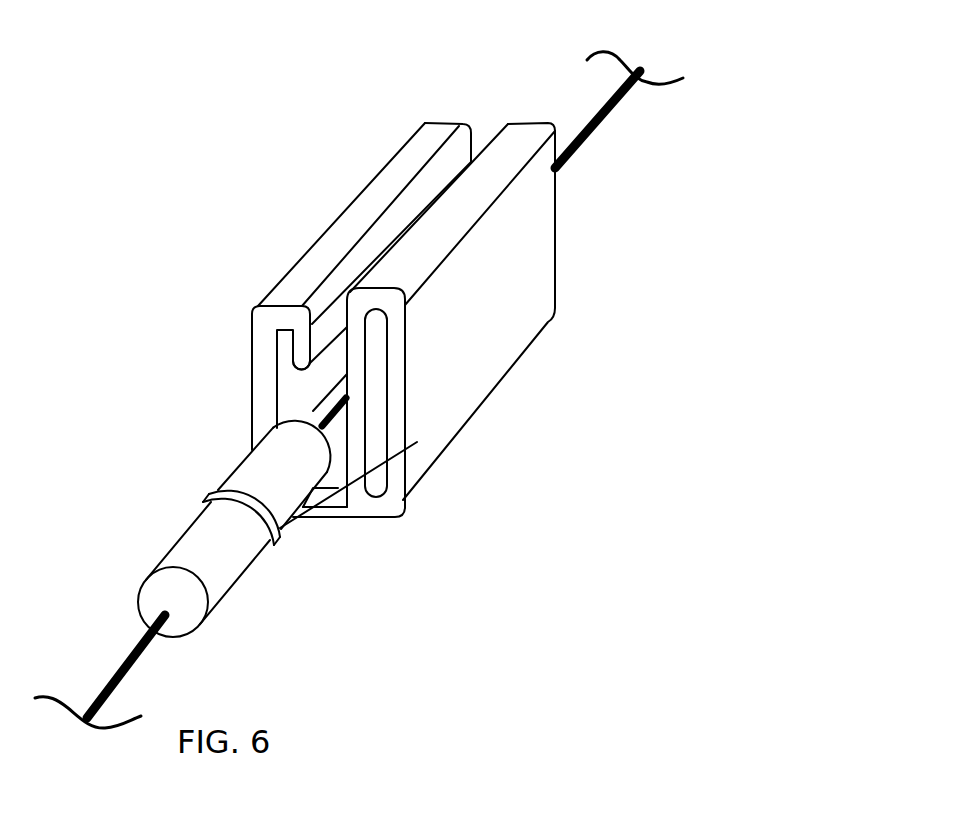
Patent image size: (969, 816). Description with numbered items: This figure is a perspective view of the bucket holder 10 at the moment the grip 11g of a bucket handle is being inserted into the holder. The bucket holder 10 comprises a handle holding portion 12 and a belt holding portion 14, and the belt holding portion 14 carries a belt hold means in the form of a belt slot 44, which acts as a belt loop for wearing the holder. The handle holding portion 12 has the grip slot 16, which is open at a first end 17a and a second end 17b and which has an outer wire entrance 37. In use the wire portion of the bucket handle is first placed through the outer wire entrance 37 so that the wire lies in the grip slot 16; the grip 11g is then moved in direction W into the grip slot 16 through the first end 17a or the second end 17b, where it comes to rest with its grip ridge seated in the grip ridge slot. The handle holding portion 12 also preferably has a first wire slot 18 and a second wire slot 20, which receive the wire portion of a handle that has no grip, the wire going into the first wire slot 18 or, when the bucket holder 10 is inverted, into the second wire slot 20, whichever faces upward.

The bucket holder 10 is at (277, 148).
The handle holding portion 12 is at (292, 552).
The belt holding portion 14 is at (375, 550).
The grip slot 16 is at (297, 391).
The first end 17a is at (265, 430).
The second end 17b is at (450, 122).
The first wire slot 18 is at (338, 490).
The second wire slot 20 is at (287, 335).
The outer wire entrance 37 is at (325, 317).
The belt slot 44 is at (374, 354).
The grip 11g is at (162, 515).
The direction W is at (137, 577).